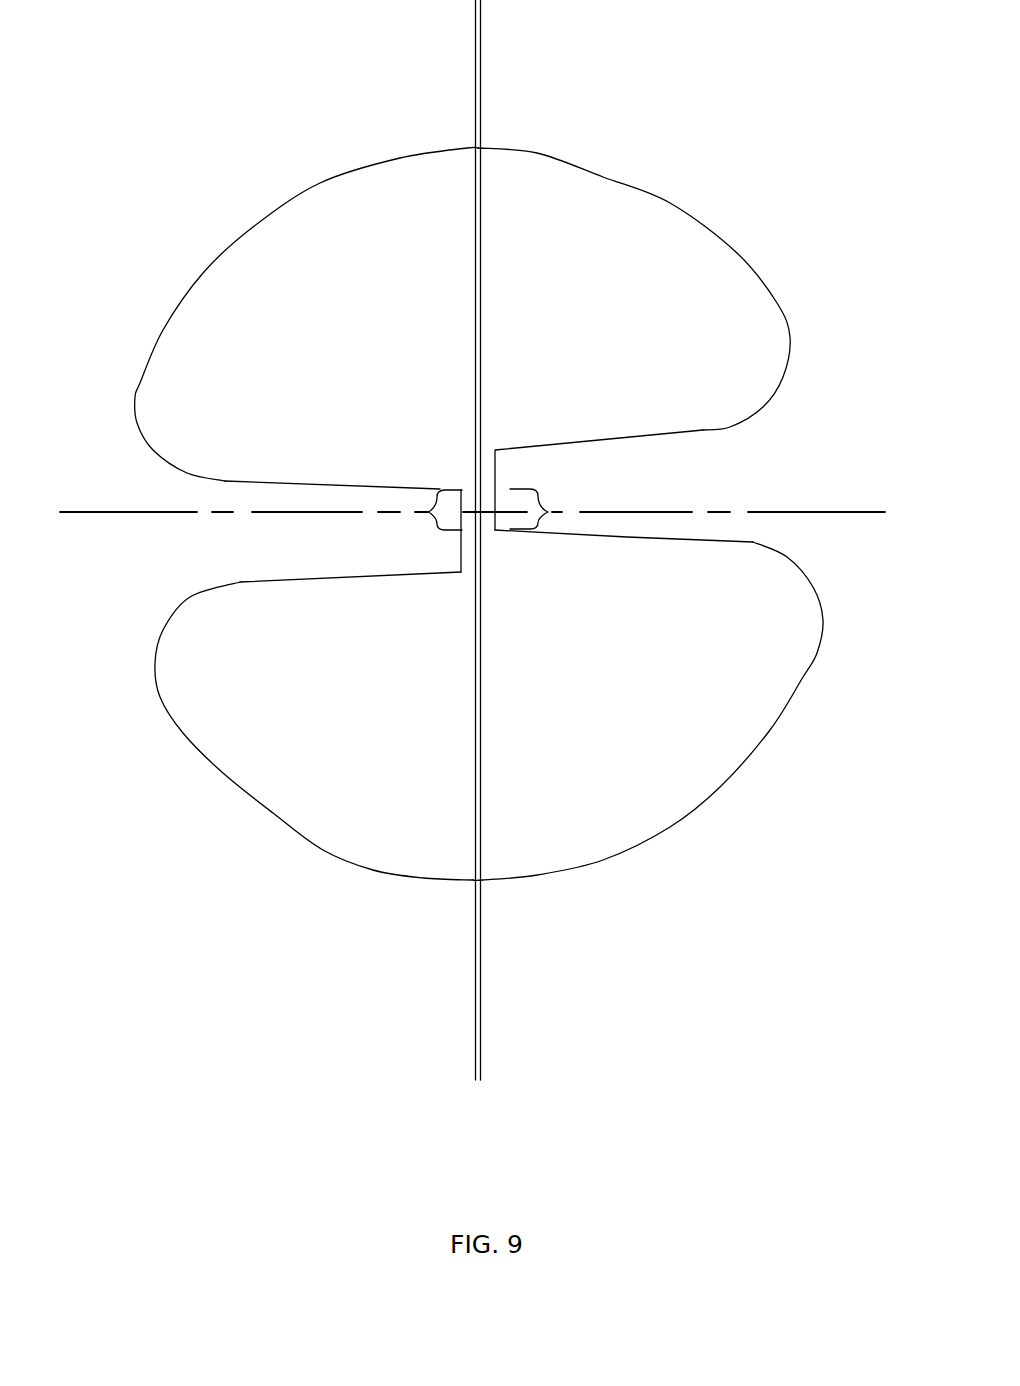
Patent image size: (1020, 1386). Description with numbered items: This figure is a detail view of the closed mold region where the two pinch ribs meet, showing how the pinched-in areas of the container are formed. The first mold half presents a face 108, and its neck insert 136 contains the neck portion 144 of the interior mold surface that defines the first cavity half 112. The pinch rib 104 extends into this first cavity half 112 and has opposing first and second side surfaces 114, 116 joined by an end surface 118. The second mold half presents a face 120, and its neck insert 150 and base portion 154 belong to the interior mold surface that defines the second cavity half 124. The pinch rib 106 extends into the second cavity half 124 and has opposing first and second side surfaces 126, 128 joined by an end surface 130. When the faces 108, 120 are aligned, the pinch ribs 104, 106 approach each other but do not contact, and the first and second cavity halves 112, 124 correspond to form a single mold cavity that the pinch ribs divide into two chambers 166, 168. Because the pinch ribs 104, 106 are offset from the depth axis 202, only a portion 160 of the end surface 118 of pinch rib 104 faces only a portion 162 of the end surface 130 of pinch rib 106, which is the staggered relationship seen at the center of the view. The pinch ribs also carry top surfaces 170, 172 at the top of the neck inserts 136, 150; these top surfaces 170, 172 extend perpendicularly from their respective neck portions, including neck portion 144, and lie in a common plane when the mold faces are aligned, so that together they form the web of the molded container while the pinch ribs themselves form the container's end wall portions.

The pinch rib 104 is at (477, 288).
The pinch rib 106 is at (314, 713).
The face 108 is at (478, 540).
The first cavity half 112 is at (634, 274).
The first side surface 114 is at (670, 202).
The second side surface 116 is at (705, 425).
The end surface 118 is at (494, 450).
The face 120 is at (473, 118).
The second cavity half 124 is at (393, 813).
The first side surface 126 is at (347, 483).
The second side surface 128 is at (305, 582).
The end surface 130 is at (461, 553).
The neck insert 136 is at (634, 238).
The neck portion 144 is at (627, 537).
The neck insert 150 is at (222, 107).
The base portion 154 is at (307, 838).
The portion of end surface 160 is at (547, 510).
The portion of end surface 162 is at (430, 511).
The chamber 166 is at (541, 740).
The chamber 168 is at (649, 238).
The top surface 170 is at (543, 452).
The top surface 172 is at (332, 421).
The depth axis 202 is at (777, 510).